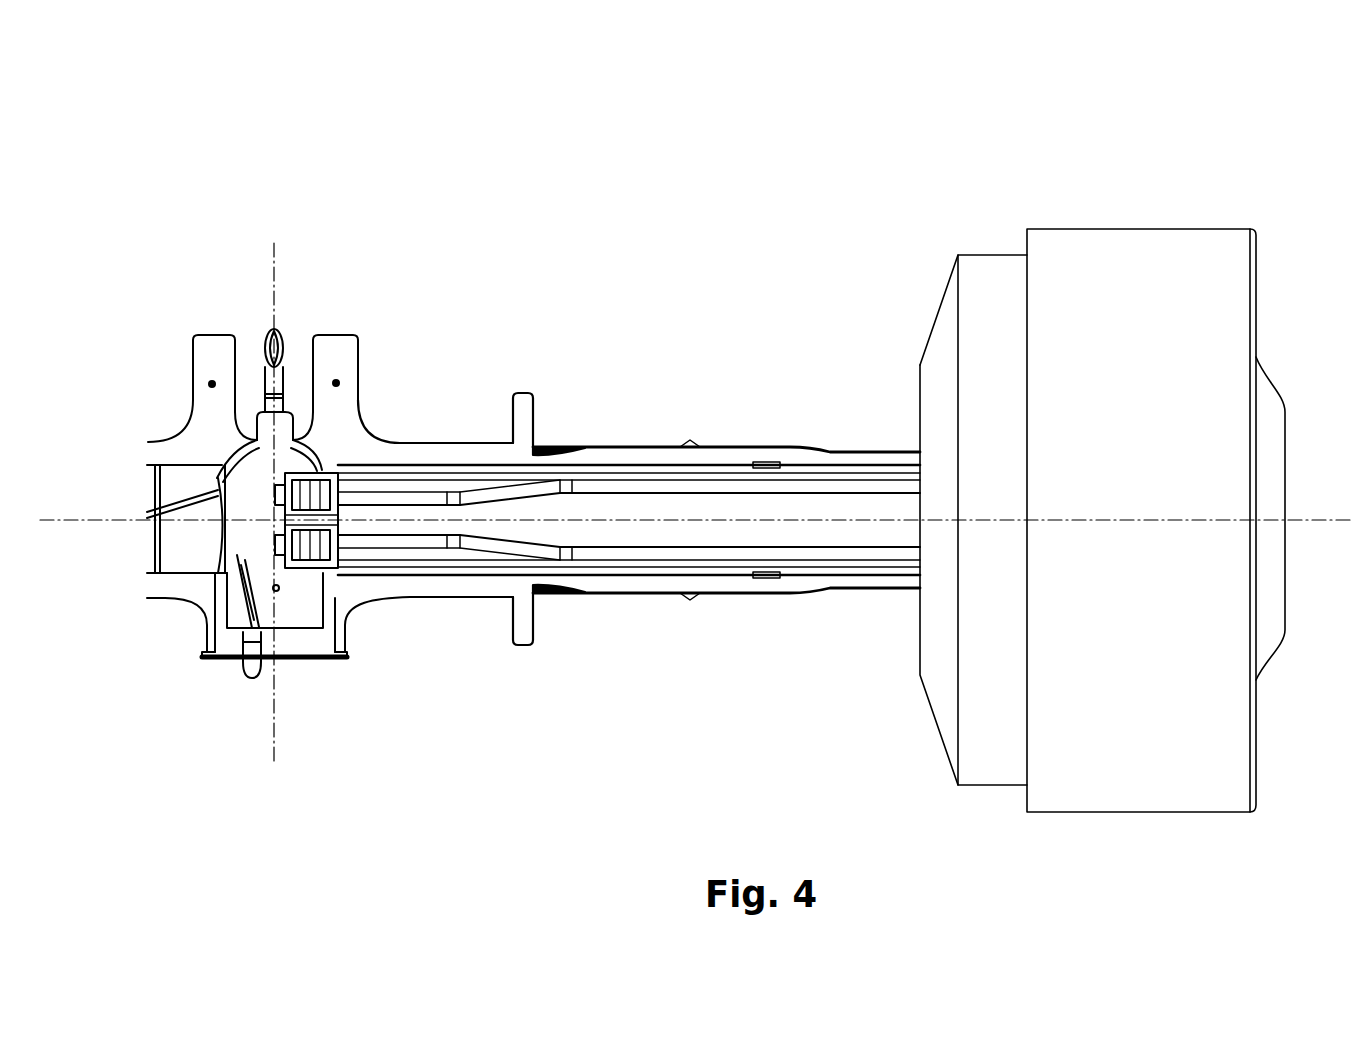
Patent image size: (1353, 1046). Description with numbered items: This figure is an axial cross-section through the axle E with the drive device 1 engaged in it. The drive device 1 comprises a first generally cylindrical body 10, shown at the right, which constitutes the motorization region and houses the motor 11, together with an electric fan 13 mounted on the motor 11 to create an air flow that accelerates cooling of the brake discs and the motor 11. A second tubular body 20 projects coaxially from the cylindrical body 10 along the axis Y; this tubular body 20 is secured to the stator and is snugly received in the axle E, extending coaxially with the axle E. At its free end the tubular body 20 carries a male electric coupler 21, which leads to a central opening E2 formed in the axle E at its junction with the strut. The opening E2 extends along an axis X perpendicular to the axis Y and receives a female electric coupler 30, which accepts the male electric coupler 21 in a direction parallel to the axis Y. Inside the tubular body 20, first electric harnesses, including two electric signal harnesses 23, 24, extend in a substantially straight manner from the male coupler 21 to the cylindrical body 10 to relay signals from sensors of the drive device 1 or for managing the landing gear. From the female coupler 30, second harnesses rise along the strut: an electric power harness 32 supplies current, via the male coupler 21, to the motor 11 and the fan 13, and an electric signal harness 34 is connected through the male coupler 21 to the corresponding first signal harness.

The drive device 1 is at (1303, 163).
The first generally cylindrical body 10 is at (978, 571).
The motor 11 is at (1000, 785).
The electric fan 13 is at (1182, 230).
The second tubular body 20 is at (629, 527).
The male electric coupler 21 is at (322, 470).
The electric signal harness 23 is at (592, 555).
The electric signal harness 24 is at (601, 490).
The female electric coupler 30 is at (307, 635).
The electric power harness 32 is at (284, 343).
The electric signal harness 34 is at (245, 677).
The axle E is at (412, 597).
The central opening E2 is at (292, 663).
The axis X is at (274, 256).
The axis Y is at (58, 520).